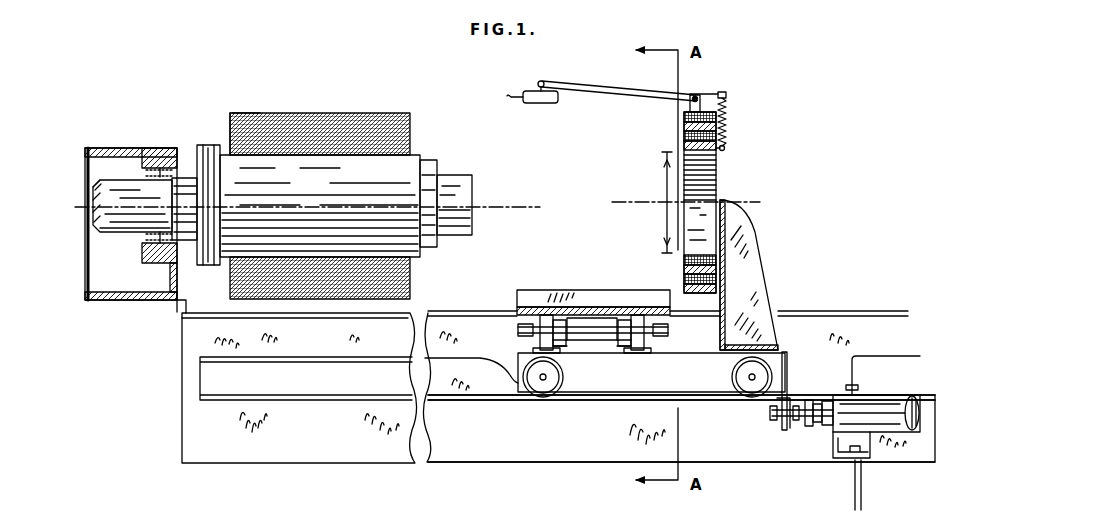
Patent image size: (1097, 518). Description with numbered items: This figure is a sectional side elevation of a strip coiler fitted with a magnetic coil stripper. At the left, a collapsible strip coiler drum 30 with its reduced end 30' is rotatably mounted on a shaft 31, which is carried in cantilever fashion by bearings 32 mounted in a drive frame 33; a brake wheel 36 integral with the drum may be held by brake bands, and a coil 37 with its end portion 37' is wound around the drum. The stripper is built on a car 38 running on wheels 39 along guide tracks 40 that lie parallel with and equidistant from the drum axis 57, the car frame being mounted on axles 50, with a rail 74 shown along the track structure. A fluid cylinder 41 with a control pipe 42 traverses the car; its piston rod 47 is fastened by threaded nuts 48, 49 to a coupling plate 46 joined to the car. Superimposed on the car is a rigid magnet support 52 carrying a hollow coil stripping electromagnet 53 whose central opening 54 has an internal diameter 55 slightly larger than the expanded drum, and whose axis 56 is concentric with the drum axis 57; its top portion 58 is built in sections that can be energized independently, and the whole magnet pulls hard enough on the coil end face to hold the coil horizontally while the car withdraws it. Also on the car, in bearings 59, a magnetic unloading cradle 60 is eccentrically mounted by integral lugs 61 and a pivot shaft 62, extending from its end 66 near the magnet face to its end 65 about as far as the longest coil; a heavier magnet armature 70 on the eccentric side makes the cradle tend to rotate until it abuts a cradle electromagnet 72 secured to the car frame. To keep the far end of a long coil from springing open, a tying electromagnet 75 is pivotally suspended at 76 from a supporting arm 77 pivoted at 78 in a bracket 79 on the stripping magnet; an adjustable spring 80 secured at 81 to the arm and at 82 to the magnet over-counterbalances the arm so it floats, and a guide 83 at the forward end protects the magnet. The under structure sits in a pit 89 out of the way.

The collapsible strip coiler drum 30 is at (337, 191).
The roller end shaft 30' is at (452, 197).
The rotatable shaft 31 is at (118, 236).
The bearings 32 is at (152, 148).
The drive frame 33 is at (158, 148).
The brake wheel 36 is at (208, 147).
The coil 37 is at (320, 185).
The magnet pole 37' is at (219, 116).
The car 38 is at (660, 353).
The wheels 39 is at (566, 386).
The guide tracks 40 is at (280, 396).
The fluid cylinder 41 is at (866, 395).
The control pipe 42 is at (884, 333).
The coupling plate 46 is at (788, 382).
The piston rod 47 is at (797, 420).
The threaded nut 48 is at (780, 428).
The threaded nut 49 is at (775, 420).
The axles 50 is at (540, 382).
The magnet support 52 is at (771, 258).
The coil stripping electromagnet 53 is at (684, 214).
The central opening 54 is at (686, 155).
The internal diameter 55 is at (660, 202).
The axis 56 is at (763, 199).
The axis 57 is at (495, 204).
The top portion 58 is at (684, 126).
The bearings 59 is at (546, 315).
The magnetic unloading cradle 60 is at (578, 290).
The lugs 61 is at (538, 318).
The pivot shaft 62 is at (606, 334).
The end 65 is at (684, 278).
The end 66 is at (517, 297).
The magnet armature 70 is at (603, 318).
The cradle electromagnet 72 is at (570, 345).
The rail 74 is at (840, 311).
The tying electromagnet 75 is at (528, 91).
The pivotal suspension 76 is at (543, 81).
The supporting arm 77 is at (642, 89).
The pivot 78 is at (700, 95).
The bracket 79 is at (690, 101).
The adjustable spring 80 is at (729, 122).
The spring attachment 81 is at (727, 92).
The spring attachment 82 is at (725, 148).
The guide 83 is at (519, 98).
The pit 89 is at (185, 348).